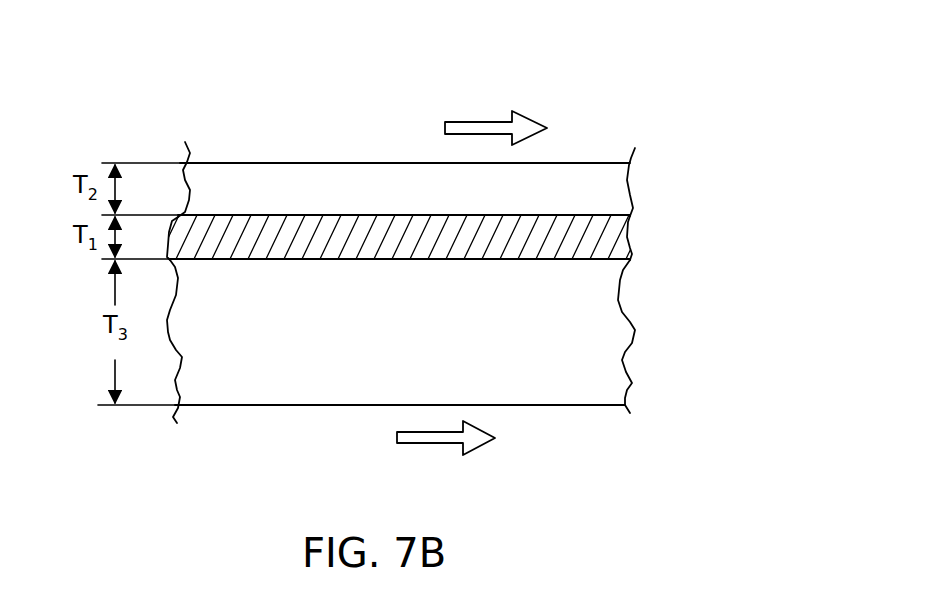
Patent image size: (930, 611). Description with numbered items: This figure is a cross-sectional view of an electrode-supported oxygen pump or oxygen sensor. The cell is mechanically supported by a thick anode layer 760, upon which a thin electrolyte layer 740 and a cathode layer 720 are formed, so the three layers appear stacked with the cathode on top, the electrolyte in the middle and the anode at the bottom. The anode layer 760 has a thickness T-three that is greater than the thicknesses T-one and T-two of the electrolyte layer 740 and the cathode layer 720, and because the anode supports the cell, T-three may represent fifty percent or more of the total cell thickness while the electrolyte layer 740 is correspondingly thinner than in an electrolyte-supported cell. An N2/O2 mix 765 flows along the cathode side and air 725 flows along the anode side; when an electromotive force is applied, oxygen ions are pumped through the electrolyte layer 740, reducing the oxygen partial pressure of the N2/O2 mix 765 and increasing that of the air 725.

The cathode layer 720 is at (549, 203).
The electrolyte layer 740 is at (549, 252).
The anode layer 760 is at (550, 330).
The N2/O2 mix 765 is at (357, 101).
The air 725 is at (410, 495).